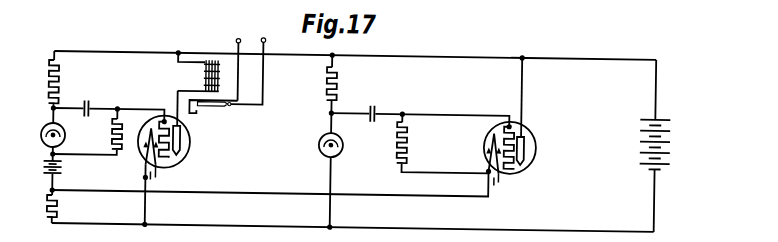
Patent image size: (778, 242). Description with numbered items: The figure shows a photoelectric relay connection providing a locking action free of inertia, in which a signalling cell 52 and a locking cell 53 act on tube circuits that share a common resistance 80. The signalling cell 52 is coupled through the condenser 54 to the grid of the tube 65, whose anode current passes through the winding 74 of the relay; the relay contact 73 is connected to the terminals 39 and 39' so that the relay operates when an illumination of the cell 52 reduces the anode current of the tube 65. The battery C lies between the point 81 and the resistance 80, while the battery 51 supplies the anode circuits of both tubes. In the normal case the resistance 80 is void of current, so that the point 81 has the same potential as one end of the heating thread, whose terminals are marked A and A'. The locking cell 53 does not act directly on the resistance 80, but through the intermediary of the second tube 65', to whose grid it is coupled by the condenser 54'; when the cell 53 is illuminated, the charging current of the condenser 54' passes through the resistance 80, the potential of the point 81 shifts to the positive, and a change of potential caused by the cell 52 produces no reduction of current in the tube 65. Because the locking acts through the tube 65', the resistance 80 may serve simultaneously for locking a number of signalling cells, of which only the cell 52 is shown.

The terminal 39 is at (250, 65).
The terminal 39' is at (235, 64).
The battery 51 is at (665, 146).
The signalling cell 52 is at (46, 131).
The locking cell 53 is at (321, 170).
The condenser 54 is at (87, 104).
The condenser 54' is at (372, 110).
The tube 65 is at (171, 129).
The amplifier tube 65' is at (521, 115).
The relay contact 73 is at (213, 112).
The winding of the relay 74 is at (199, 72).
The resistance 80 is at (41, 206).
The point 81 is at (50, 155).
The filament terminal A is at (151, 178).
The filament terminal A' is at (497, 183).
The battery C is at (59, 172).